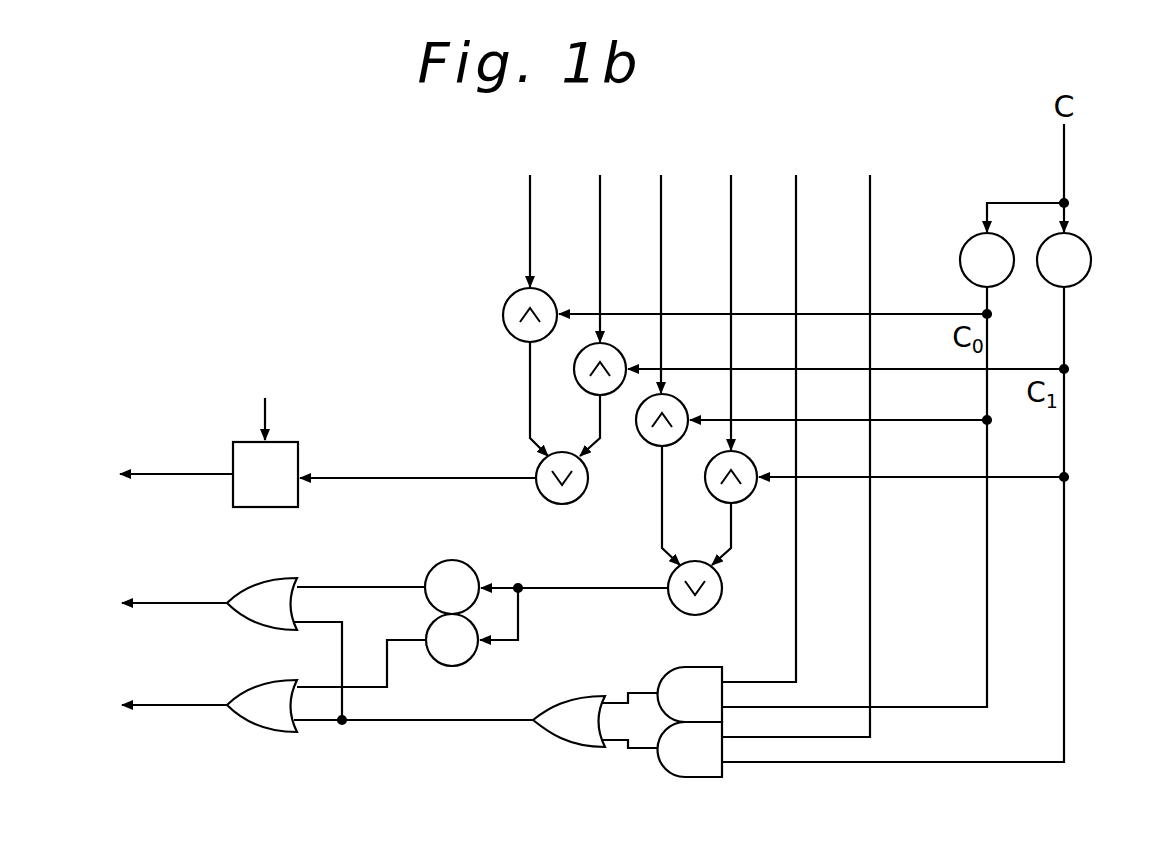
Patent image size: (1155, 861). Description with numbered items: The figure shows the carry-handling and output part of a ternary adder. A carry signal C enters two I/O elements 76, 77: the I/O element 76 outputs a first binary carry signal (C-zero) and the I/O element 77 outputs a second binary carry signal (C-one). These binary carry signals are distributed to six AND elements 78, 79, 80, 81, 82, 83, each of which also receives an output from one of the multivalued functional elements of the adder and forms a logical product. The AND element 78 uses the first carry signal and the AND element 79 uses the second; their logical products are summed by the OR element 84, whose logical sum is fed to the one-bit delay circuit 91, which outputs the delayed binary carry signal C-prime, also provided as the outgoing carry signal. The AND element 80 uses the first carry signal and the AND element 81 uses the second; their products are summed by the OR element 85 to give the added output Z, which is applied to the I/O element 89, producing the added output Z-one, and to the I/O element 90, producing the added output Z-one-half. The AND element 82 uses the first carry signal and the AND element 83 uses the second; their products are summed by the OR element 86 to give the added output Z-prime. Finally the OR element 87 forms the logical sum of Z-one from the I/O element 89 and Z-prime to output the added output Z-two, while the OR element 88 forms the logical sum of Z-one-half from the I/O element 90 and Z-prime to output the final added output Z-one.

The I/O element 76 is at (970, 242).
The I/O element 77 is at (1082, 244).
The AND element 78 is at (508, 303).
The AND element 79 is at (616, 352).
The AND element 80 is at (681, 404).
The AND element 81 is at (748, 460).
The AND element 82 is at (716, 668).
The AND element 83 is at (708, 778).
The OR element 84 is at (585, 493).
The OR element 85 is at (722, 590).
The OR element 86 is at (584, 697).
The OR element 87 is at (293, 580).
The OR element 88 is at (266, 682).
The I/O element 89 is at (468, 567).
The I/O element 90 is at (470, 660).
The one-bit delay circuit 91 is at (298, 444).